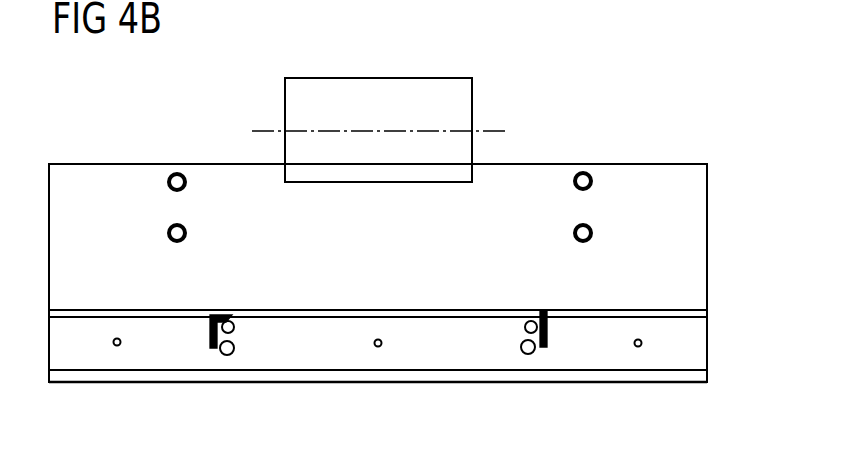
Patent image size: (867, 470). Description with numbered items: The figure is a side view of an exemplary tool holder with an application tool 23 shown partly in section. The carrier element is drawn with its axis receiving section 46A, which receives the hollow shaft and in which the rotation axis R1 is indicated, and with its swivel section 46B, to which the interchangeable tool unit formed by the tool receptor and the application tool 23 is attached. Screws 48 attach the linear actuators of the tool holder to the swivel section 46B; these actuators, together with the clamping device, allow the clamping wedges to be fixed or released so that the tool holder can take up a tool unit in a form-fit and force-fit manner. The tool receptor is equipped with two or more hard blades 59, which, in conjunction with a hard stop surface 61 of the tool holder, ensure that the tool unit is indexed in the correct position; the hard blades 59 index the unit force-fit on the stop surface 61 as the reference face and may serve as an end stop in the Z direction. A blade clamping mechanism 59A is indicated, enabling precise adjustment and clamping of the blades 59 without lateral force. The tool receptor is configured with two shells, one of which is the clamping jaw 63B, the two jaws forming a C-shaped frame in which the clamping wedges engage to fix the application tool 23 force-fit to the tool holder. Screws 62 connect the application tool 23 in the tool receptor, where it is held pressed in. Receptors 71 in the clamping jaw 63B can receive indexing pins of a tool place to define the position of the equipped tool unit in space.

The axis receiving section 46A is at (307, 130).
The swivel section 46B is at (707, 246).
The rotation axis R1 is at (494, 128).
The screws 48 is at (193, 186).
The hard blades 59 is at (380, 354).
The blade clamping mechanism 59A is at (237, 329).
The hard stop surface 61 is at (160, 313).
The screws 62 is at (117, 337).
The clamping jaw 63B is at (696, 344).
The application tool 23 is at (80, 385).
The receptors 71 is at (530, 355).